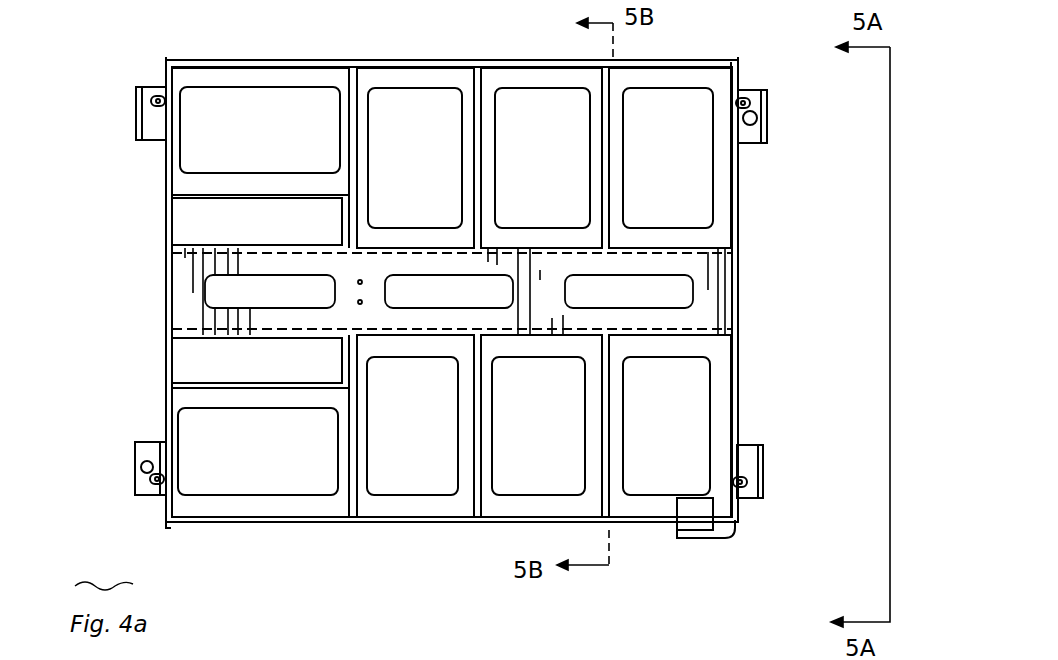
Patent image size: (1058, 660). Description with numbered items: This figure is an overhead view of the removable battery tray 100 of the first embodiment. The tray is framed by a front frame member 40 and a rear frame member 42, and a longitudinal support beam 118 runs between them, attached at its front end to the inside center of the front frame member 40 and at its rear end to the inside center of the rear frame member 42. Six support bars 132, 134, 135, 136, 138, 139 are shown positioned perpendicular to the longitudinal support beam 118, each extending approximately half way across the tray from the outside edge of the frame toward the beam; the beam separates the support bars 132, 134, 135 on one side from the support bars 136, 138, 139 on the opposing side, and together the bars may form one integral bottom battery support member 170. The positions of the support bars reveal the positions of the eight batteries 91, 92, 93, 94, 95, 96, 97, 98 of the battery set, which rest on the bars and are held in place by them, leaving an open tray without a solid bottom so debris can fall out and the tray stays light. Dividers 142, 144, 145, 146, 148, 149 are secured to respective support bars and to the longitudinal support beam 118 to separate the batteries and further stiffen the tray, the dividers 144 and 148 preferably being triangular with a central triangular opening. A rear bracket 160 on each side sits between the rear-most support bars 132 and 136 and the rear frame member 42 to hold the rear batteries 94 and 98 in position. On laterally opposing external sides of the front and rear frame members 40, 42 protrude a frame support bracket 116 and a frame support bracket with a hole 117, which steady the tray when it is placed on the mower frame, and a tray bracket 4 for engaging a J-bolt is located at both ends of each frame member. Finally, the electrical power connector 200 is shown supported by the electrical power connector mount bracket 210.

The removable battery tray 100 is at (355, 659).
The front frame member 40 is at (740, 278).
The rear frame member 42 is at (163, 288).
The tray bracket 4 is at (160, 90).
The frame support bracket 116 is at (132, 97).
The frame support bracket with a hole 117 is at (767, 128).
The longitudinal support beam 118 is at (660, 320).
The rear bracket 160 is at (216, 212).
The battery 91 is at (674, 172).
The battery 92 is at (546, 172).
The battery 93 is at (418, 172).
The battery 94 is at (268, 142).
The battery 95 is at (677, 435).
The battery 96 is at (546, 447).
The battery 97 is at (424, 447).
The battery 98 is at (278, 457).
The support bar 132 is at (362, 410).
The support bar 134 is at (487, 407).
The support bar 135 is at (610, 410).
The support bar 136 is at (360, 200).
The support bar 138 is at (488, 202).
The support bar 139 is at (617, 200).
The divider 142 is at (360, 500).
The divider 144 is at (480, 503).
The divider 145 is at (607, 507).
The divider 146 is at (360, 80).
The divider 148 is at (482, 78).
The divider 149 is at (610, 80).
The bottom battery support member 170 is at (705, 82).
The electrical power connector 200 is at (687, 552).
The electrical power connector mount bracket 210 is at (723, 540).